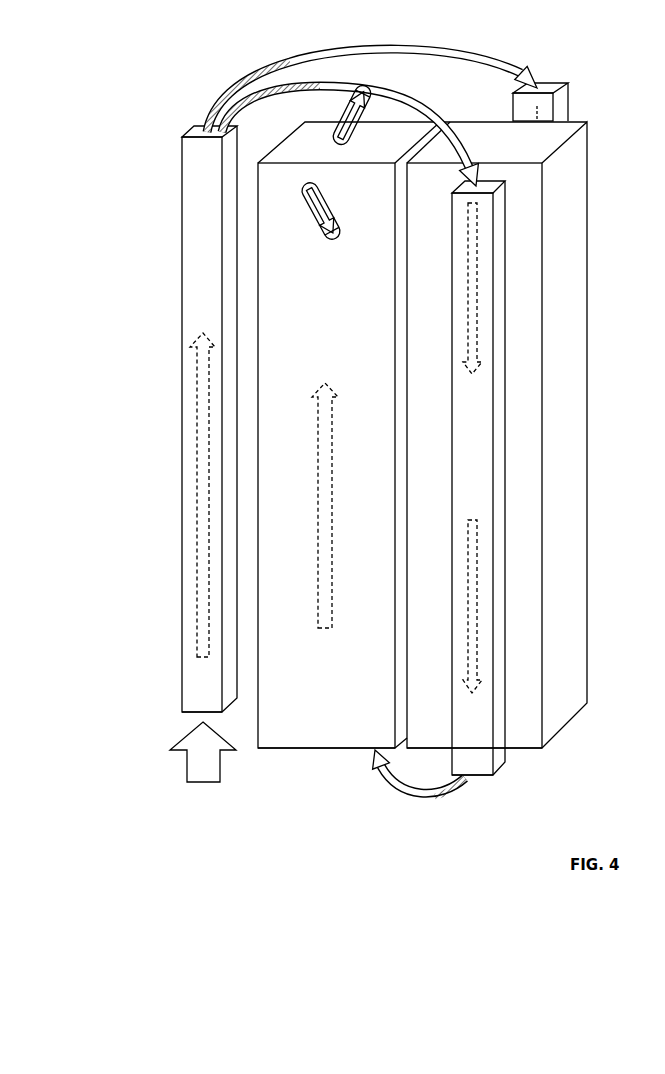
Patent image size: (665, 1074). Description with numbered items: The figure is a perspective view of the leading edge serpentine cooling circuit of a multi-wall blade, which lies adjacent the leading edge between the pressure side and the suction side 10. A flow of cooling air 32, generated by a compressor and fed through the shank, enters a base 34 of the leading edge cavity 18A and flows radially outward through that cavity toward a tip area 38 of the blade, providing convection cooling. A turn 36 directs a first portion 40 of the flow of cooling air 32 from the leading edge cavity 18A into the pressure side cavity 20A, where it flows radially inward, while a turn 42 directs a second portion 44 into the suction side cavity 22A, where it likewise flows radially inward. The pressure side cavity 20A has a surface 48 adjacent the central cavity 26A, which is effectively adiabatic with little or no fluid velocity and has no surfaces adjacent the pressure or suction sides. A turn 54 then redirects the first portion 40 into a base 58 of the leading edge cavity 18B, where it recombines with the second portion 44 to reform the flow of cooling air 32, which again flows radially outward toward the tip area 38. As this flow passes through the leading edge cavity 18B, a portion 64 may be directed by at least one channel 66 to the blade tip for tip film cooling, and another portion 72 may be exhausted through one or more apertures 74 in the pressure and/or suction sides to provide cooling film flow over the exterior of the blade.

The suction side 10 is at (92, 95).
The leading edge cavity 18A is at (209, 419).
The leading edge cavity 18B is at (422, 435).
The pressure side cavity 20A is at (478, 478).
The suction side cavity 22A is at (560, 92).
The central cavity 26A is at (491, 435).
The flow of cooling air 32 is at (195, 368).
The base 34 is at (183, 715).
The turn 36 is at (216, 120).
The tip area 38 is at (497, 767).
The first portion 40 is at (468, 322).
The turn 42 is at (412, 50).
The second portion 44 is at (535, 113).
The surface 48 is at (530, 749).
The turn 54 is at (428, 797).
The base 58 is at (302, 750).
The portion 64 is at (338, 133).
The channel 66 is at (373, 83).
The portion 72 is at (308, 210).
The apertures 74 is at (340, 222).